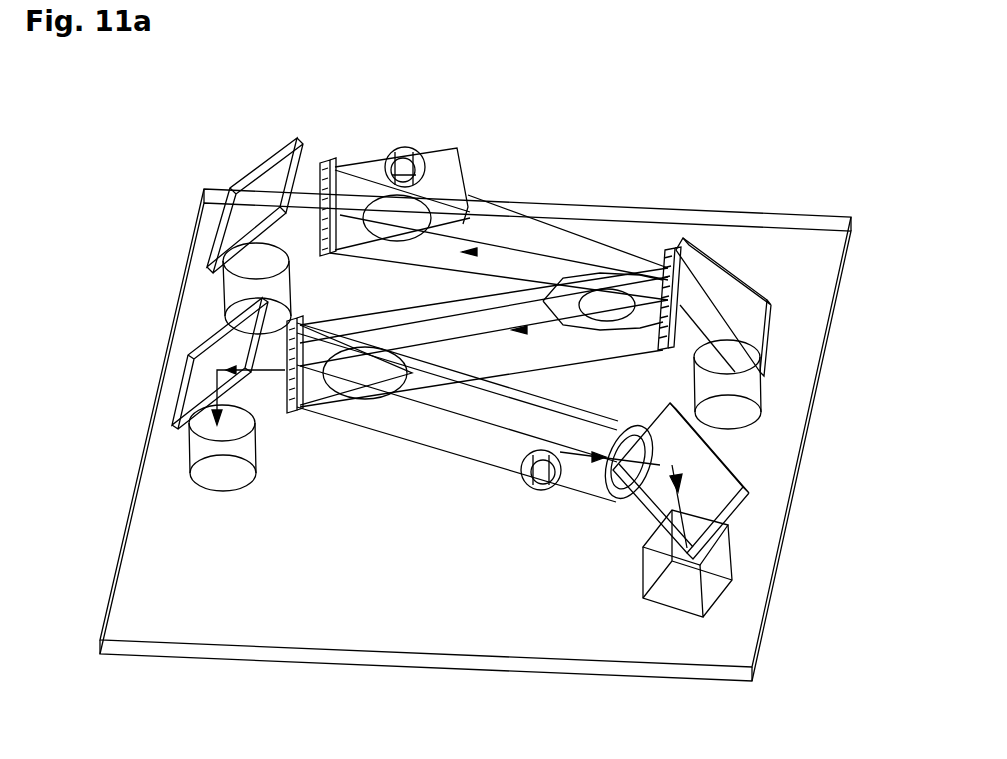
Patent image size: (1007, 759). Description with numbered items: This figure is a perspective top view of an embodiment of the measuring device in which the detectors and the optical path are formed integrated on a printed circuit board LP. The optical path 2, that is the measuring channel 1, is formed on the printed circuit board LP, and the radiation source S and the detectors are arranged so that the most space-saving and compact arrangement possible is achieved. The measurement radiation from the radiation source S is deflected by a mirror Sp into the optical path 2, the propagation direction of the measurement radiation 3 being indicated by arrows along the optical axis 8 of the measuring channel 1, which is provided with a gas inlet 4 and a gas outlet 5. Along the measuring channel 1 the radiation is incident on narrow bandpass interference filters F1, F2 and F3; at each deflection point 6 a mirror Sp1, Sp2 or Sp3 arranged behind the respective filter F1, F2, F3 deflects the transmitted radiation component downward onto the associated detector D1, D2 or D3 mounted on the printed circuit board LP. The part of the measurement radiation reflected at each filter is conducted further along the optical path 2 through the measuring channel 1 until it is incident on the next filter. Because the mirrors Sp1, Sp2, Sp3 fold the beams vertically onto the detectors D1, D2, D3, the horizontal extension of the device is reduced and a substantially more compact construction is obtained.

The printed circuit board LP is at (240, 547).
The mirror 3 Sp3 is at (240, 220).
The detector 3 D3 is at (237, 290).
The filter 3 F3 is at (327, 178).
The gas outlet 5 is at (400, 147).
The deflection point 6 is at (663, 287).
The optical axis 8 is at (590, 297).
The measuring channel 1 is at (492, 443).
The optical path 2 is at (462, 415).
The propagation direction of the measurement radiation 3 is at (502, 330).
The gas inlet 4 is at (528, 486).
The filter 1 F1 is at (287, 352).
The mirror 1 Sp1 is at (202, 382).
The detector 1 D1 is at (200, 452).
The filter 2 F2 is at (668, 343).
The mirror 2 Sp2 is at (737, 320).
The detector 2 D2 is at (750, 390).
The mirror Sp is at (700, 487).
The radiation source S is at (720, 562).